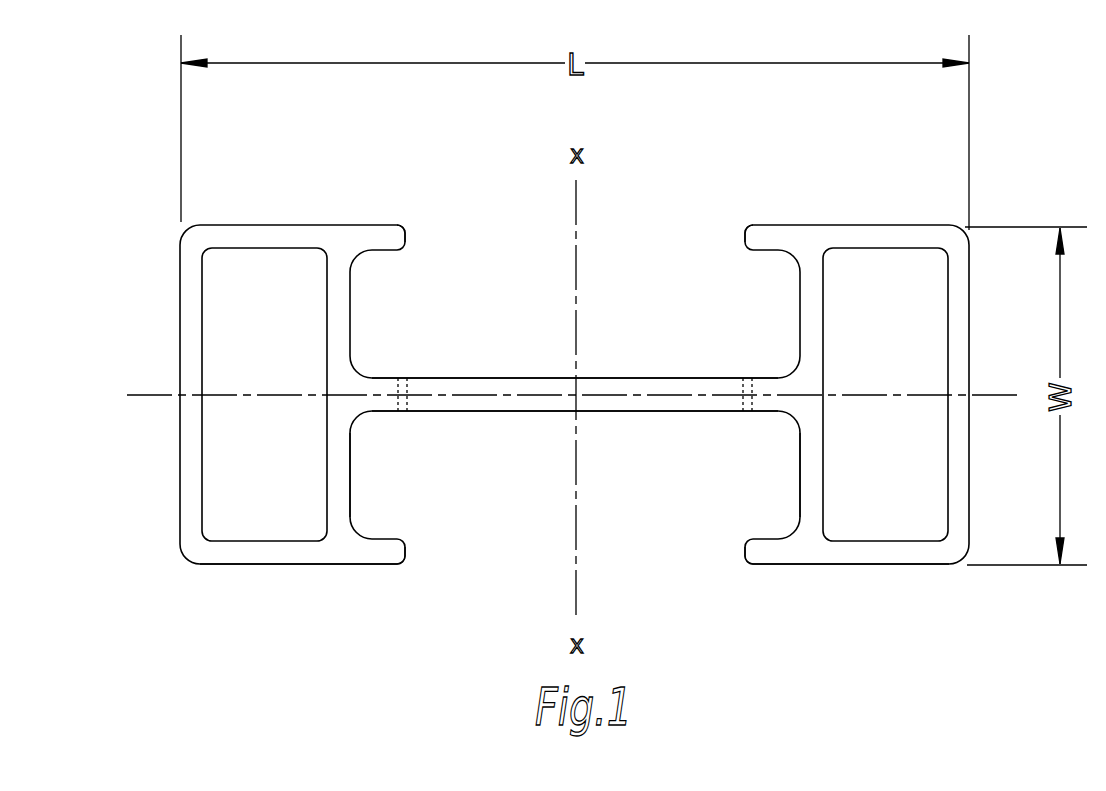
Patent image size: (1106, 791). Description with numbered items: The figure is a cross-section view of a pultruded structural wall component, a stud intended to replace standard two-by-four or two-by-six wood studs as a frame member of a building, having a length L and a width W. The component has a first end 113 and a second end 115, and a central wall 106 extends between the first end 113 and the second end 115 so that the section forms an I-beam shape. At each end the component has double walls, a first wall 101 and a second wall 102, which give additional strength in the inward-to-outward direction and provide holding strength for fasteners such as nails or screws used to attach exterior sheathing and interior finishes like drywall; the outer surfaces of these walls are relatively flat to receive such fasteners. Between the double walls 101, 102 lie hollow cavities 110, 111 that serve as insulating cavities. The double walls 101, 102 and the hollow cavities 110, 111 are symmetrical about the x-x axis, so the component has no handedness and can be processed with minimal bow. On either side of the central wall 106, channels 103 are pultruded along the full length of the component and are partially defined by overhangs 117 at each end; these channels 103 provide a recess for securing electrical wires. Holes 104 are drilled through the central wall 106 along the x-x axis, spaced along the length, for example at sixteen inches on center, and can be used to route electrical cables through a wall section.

The first wall 101 is at (188, 437).
The second wall 102 is at (338, 478).
The channel 103 is at (647, 298).
The hole 104 is at (402, 414).
The central wall 106 is at (518, 386).
The hollow cavity 110 is at (928, 292).
The hollow cavity 111 is at (225, 292).
The first end 113 is at (883, 557).
The second end 115 is at (270, 558).
The overhang 117 is at (405, 232).